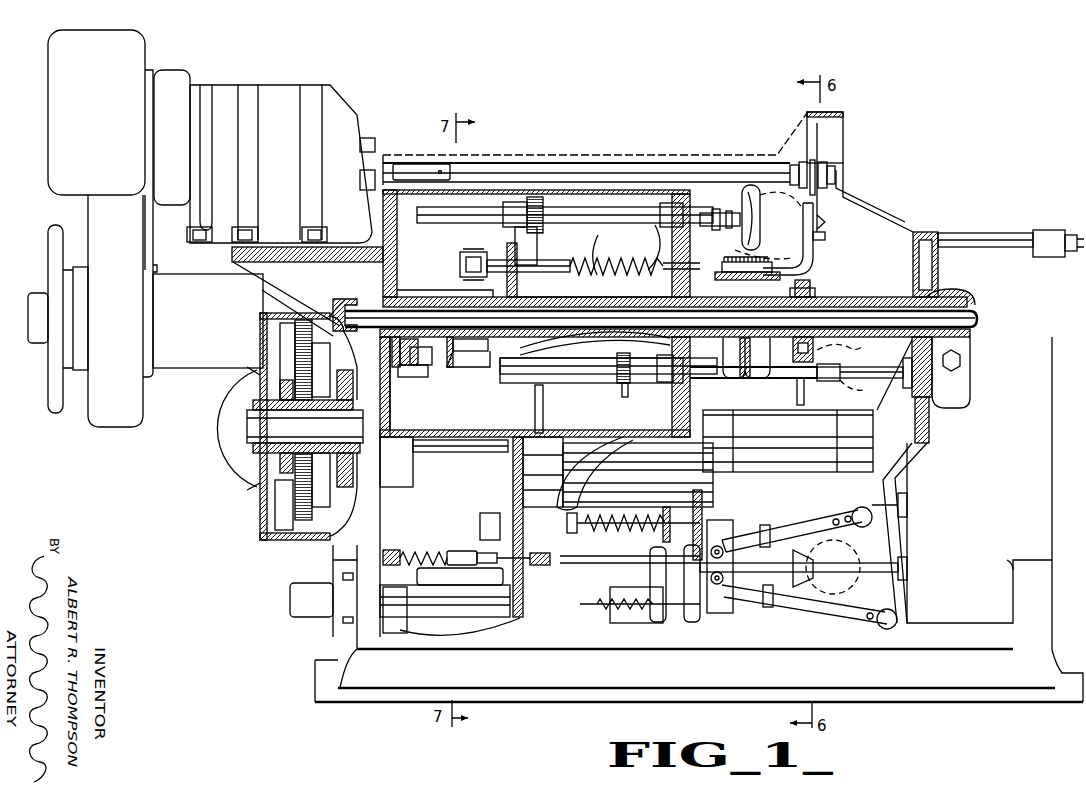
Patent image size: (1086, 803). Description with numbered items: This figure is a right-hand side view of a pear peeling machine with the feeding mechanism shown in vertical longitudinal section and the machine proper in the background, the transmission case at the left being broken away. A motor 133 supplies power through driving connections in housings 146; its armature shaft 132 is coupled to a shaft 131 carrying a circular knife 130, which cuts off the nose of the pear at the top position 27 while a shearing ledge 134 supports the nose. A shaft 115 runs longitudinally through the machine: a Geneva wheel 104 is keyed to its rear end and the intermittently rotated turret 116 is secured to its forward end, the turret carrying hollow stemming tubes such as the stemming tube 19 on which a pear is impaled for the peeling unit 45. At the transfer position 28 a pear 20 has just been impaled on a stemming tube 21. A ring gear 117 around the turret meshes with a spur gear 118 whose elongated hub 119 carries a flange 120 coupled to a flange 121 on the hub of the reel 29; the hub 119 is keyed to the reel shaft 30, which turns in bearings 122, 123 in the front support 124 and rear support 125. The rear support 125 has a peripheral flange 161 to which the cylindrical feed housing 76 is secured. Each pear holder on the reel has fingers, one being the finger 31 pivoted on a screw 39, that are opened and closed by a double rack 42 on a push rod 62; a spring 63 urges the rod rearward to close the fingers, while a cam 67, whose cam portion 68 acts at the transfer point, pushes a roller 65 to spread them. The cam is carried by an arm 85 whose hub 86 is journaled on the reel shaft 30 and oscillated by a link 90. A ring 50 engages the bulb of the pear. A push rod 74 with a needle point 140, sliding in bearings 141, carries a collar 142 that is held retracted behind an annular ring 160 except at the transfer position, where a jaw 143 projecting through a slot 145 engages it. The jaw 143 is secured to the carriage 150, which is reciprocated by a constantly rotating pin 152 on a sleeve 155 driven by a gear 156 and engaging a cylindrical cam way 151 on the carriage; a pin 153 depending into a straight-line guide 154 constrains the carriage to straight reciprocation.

The hollow stemming tube 19 is at (852, 584).
The pear 20 is at (856, 353).
The stemming tube 21 is at (851, 388).
The top position 27 is at (828, 222).
The transfer position 28 is at (765, 385).
The reel 29 is at (613, 296).
The reel shaft 30 is at (977, 318).
The finger 31 is at (800, 241).
The screw 39 is at (752, 262).
The double rack 42 is at (727, 267).
The peeling unit 45 is at (807, 506).
The ring 50 is at (742, 201).
The push rod 62 is at (560, 273).
The spring 63 is at (604, 258).
The roller 65 is at (463, 258).
The cam 67 is at (454, 368).
The cam portion 68 is at (424, 362).
The push rod 74 is at (607, 228).
The cylindrical feed housing 76 is at (477, 429).
The arm 85 is at (424, 378).
The hub 86 is at (437, 296).
The link 90 is at (398, 339).
The Geneva wheel 104 is at (283, 493).
The shaft 115 is at (255, 428).
The turret 116 is at (883, 476).
The ring gear 117 is at (931, 433).
The spur gear 118 is at (918, 235).
The hub 119 is at (863, 299).
The flange 120 is at (812, 288).
The flange 121 is at (808, 278).
The bearing 122 is at (973, 293).
The bearing 123 is at (352, 298).
The front support 124 is at (955, 392).
The rear support 125 is at (388, 367).
The circular knife 130 is at (816, 151).
The shaft 131 is at (713, 174).
The armature shaft 132 is at (384, 164).
The motor 133 is at (296, 163).
The shearing ledge 134 is at (827, 238).
The needle point 140 is at (798, 384).
The bearing 141 is at (667, 221).
The collar 142 is at (548, 229).
The jaw 143 is at (617, 383).
The slot 145 is at (583, 386).
The housings 146 is at (151, 258).
The carriage 150 is at (515, 497).
The cylindrical cam way 151 is at (603, 463).
The pin 152 is at (562, 460).
The pin 153 is at (519, 600).
The straight-line guide 154 is at (481, 634).
The sleeve 155 is at (467, 444).
The gear 156 is at (343, 513).
The annular ring 160 is at (543, 206).
The peripheral flange 161 is at (400, 426).